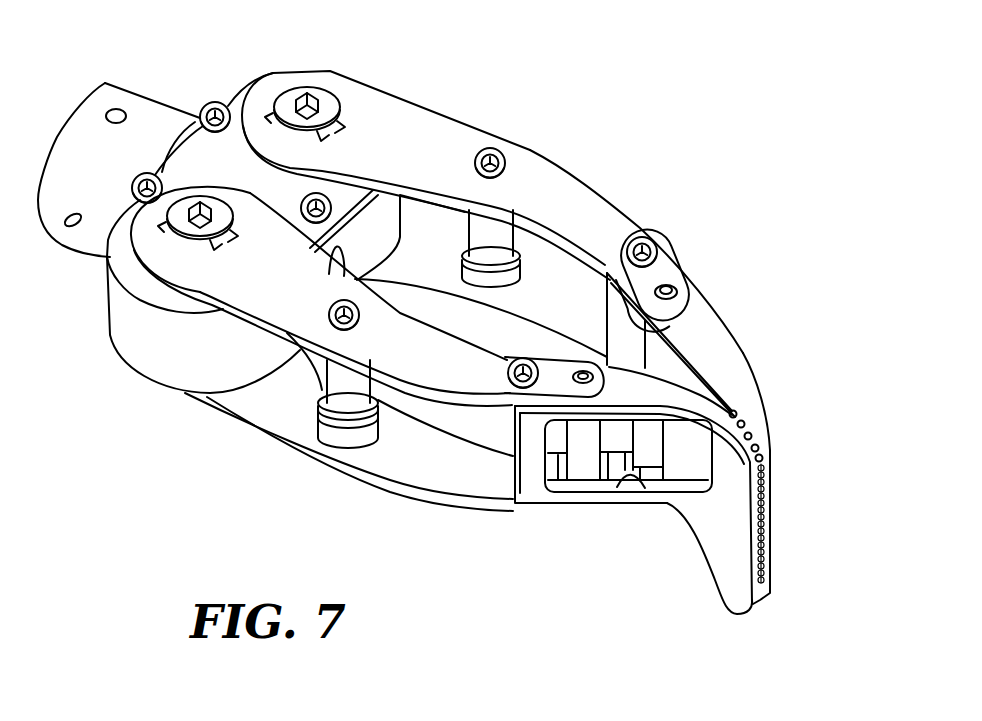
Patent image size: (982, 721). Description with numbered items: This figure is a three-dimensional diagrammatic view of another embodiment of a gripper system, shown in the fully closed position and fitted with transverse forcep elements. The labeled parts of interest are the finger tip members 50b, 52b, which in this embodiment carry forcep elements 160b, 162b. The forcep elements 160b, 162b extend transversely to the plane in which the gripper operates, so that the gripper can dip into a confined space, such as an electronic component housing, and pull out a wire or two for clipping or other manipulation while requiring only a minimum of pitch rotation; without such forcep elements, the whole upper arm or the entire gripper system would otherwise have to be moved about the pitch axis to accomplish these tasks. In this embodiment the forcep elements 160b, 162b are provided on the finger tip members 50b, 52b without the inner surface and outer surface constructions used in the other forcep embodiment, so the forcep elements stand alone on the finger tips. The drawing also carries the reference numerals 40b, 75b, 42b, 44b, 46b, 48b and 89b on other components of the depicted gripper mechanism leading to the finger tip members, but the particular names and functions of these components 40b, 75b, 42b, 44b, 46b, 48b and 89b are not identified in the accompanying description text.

The mounting bracket 75b is at (143, 54).
The gripper finger assembly 40b is at (722, 118).
The upper link arm 42b is at (481, 116).
The curved arm extension 46b is at (538, 140).
The finger tip member 50b is at (757, 355).
The lower link arm 44b is at (228, 451).
The base plate 48b is at (381, 480).
The finger tip member 52b is at (530, 494).
The notch 89b is at (620, 484).
The forcep element 160b is at (772, 527).
The forcep element 162b is at (745, 578).